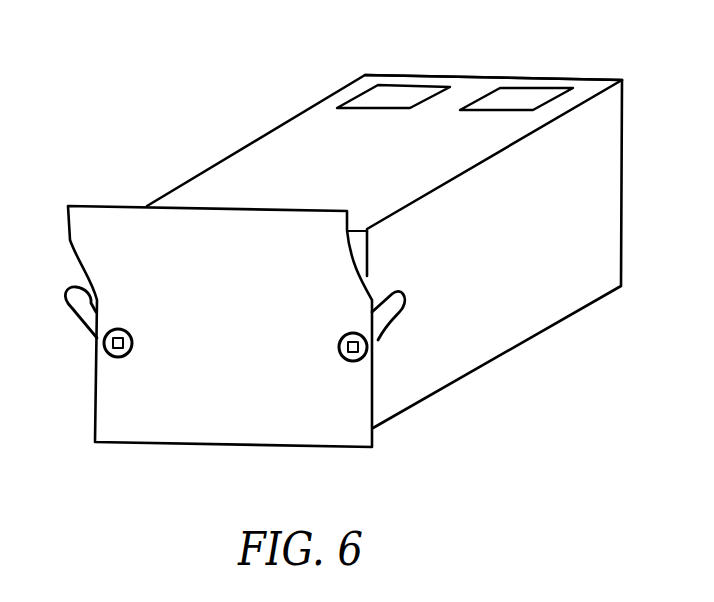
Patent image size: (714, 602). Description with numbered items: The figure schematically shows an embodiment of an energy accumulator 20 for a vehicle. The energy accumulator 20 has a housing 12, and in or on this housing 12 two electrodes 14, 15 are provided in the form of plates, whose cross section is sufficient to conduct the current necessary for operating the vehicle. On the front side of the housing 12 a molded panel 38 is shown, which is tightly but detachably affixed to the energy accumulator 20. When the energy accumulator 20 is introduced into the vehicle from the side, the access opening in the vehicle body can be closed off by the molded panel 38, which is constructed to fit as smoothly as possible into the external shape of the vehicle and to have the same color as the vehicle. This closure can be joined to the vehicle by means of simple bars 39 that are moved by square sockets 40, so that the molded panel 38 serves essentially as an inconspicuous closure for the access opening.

The housing 12 is at (228, 178).
The electrode 14 is at (395, 100).
The electrode 15 is at (520, 98).
The energy accumulator 20 is at (282, 96).
The molded panel 38 is at (100, 221).
The bars 39 is at (85, 309).
The square sockets 40 is at (133, 343).